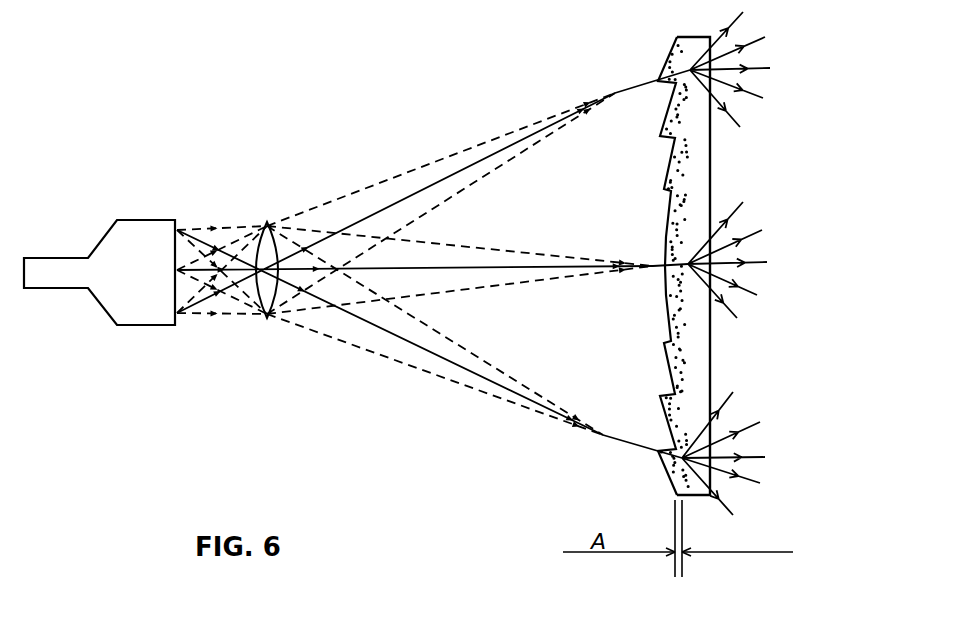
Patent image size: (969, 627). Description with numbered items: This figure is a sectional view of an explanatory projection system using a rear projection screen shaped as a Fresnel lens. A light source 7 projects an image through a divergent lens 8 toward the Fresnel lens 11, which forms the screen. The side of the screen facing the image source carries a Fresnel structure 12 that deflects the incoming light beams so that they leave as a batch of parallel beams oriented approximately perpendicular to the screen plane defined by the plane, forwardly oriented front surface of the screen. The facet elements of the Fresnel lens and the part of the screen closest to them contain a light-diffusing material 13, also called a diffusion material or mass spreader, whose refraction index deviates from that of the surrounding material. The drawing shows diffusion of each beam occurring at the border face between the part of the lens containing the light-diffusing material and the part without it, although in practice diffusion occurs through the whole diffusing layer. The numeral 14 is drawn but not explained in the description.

The light source 7 is at (109, 315).
The divergent lens 8 is at (268, 316).
The Fresnel lens 11 is at (716, 362).
The Fresnel structure 12 is at (660, 396).
The light-diffusing material 13 is at (670, 65).
The structured surface of screen 14 is at (663, 130).